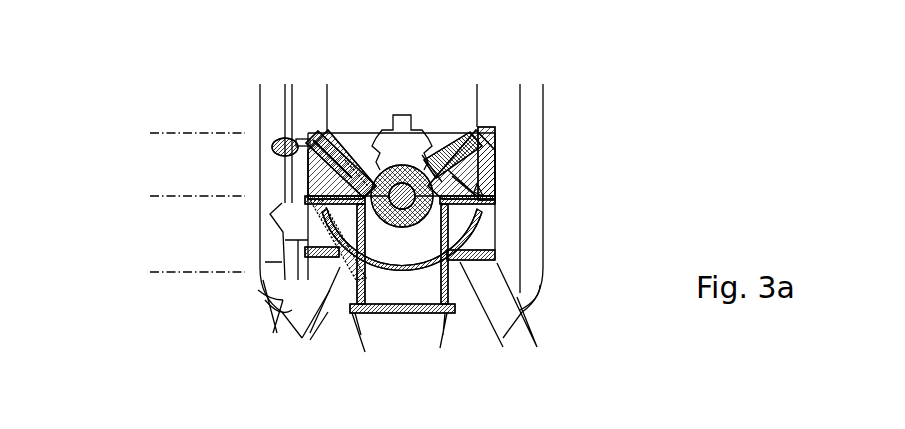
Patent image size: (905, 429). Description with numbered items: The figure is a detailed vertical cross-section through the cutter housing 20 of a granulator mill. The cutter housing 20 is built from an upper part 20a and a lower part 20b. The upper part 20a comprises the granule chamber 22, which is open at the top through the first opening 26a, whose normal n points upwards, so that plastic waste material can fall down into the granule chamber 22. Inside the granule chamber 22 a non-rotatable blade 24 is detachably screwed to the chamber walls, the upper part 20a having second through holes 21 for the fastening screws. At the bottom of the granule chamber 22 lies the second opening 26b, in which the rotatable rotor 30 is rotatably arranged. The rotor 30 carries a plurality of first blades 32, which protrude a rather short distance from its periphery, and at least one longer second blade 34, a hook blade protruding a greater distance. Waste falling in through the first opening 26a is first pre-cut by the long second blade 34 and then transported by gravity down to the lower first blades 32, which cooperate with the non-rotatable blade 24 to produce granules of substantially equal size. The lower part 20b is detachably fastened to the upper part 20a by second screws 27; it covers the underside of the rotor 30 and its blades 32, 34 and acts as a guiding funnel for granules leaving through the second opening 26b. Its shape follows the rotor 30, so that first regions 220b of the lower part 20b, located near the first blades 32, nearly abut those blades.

The cutter housing 20 is at (497, 137).
The upper part 20a is at (139, 133).
The lower part 20b is at (139, 196).
The second through holes 21 is at (485, 182).
The granule chamber 22 is at (458, 135).
The non-rotatable blade 24 is at (492, 153).
The first opening 26a is at (360, 133).
The second opening 26b is at (368, 192).
The second screws 27 is at (480, 188).
The rotatable rotor 30 is at (405, 195).
The first blades 32 is at (402, 226).
The second blade 34 is at (406, 121).
The first regions 220b is at (362, 190).